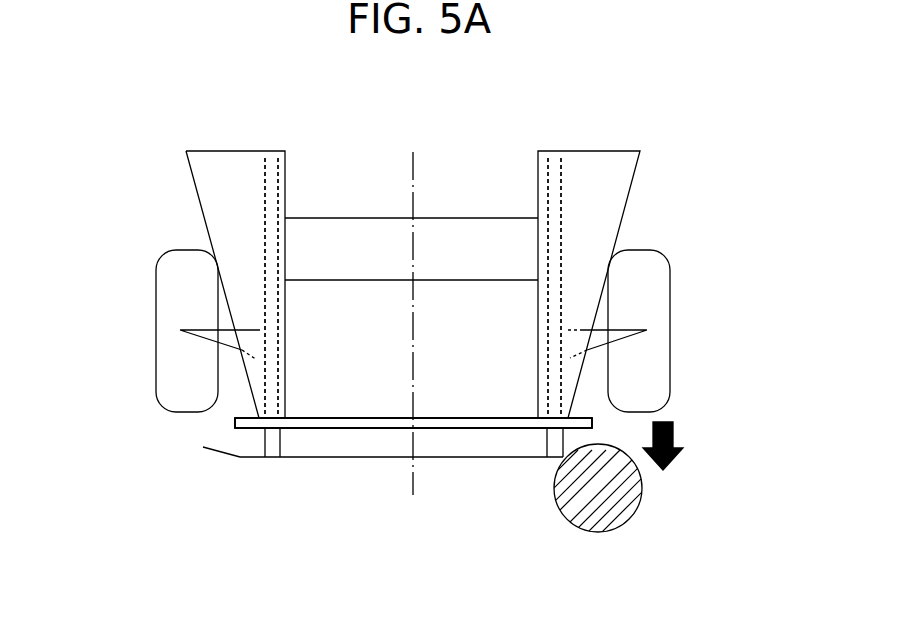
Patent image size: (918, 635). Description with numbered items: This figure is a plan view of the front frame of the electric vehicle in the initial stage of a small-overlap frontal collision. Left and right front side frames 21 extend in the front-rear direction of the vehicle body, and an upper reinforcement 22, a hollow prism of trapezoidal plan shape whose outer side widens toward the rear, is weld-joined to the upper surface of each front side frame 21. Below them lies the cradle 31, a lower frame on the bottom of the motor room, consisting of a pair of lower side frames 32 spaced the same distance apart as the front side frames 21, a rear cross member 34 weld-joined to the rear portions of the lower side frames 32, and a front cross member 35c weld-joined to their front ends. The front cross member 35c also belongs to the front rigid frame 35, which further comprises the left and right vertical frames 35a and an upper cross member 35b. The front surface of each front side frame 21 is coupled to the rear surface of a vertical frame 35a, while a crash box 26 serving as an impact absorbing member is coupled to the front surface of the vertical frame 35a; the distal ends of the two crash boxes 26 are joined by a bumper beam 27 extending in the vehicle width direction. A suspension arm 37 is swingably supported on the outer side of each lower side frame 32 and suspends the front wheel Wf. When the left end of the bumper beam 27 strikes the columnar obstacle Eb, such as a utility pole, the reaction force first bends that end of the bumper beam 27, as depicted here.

The upper reinforcement 22 is at (193, 185).
The front side frame 21 is at (267, 225).
The lower side frame 32 is at (414, 288).
The rear cross member 34 is at (348, 218).
The cradle 31 is at (470, 207).
The suspension arm 37 is at (205, 328).
The front wheel wf is at (156, 352).
The front rigid frame 35 is at (470, 414).
The vertical frame 35a is at (235, 423).
The upper cross member 35b is at (348, 418).
The front cross member 35c is at (413, 395).
The crash box 26 is at (282, 446).
The bumper beam 27 is at (455, 458).
The columnar obstacle Eb is at (643, 488).